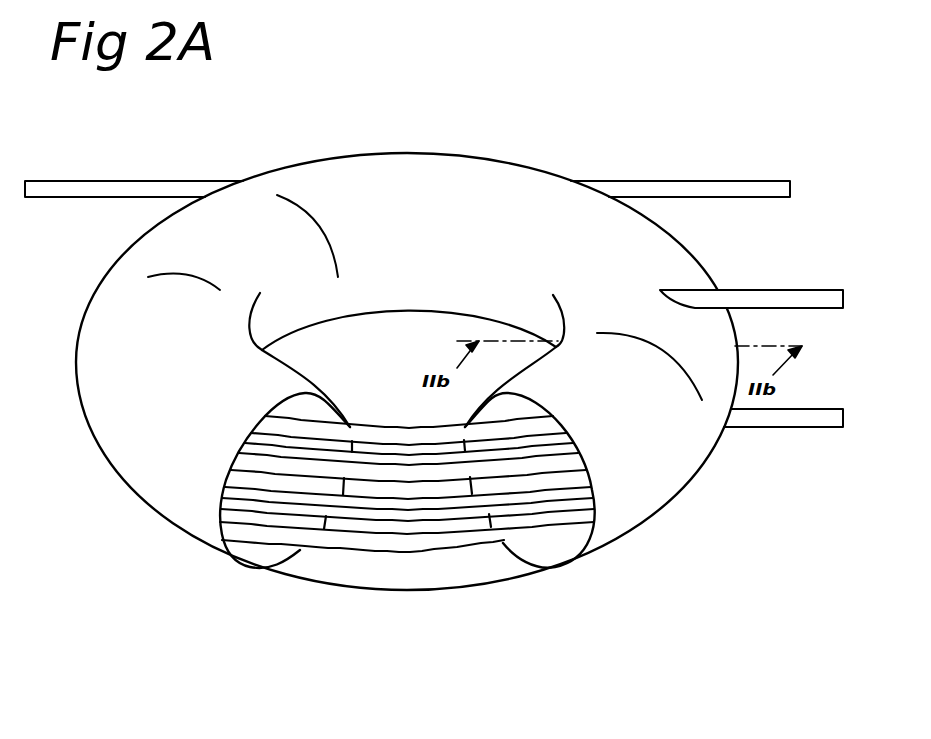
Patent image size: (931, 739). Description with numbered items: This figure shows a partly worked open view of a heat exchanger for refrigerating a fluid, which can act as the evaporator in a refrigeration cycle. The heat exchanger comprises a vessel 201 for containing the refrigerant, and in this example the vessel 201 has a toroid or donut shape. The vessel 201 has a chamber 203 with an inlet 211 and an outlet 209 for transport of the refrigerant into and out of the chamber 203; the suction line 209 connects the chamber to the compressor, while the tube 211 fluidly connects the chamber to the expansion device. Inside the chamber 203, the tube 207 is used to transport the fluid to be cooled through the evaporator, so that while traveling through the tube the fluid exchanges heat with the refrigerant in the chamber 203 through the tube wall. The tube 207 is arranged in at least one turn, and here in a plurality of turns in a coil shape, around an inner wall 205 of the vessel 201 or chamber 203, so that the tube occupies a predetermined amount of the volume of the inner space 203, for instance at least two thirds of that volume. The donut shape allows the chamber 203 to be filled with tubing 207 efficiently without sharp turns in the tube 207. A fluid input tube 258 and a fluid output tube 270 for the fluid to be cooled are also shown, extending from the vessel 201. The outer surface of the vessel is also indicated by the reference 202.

The vessel 201 is at (673, 505).
The core outer surface 202 is at (677, 257).
The chamber 203 is at (270, 553).
The inner wall 205 is at (458, 220).
The tube 207 is at (430, 490).
The outlet 209 is at (820, 303).
The inlet 211 is at (827, 428).
The fluid input tube 258 is at (131, 191).
The fluid output tube 270 is at (690, 189).